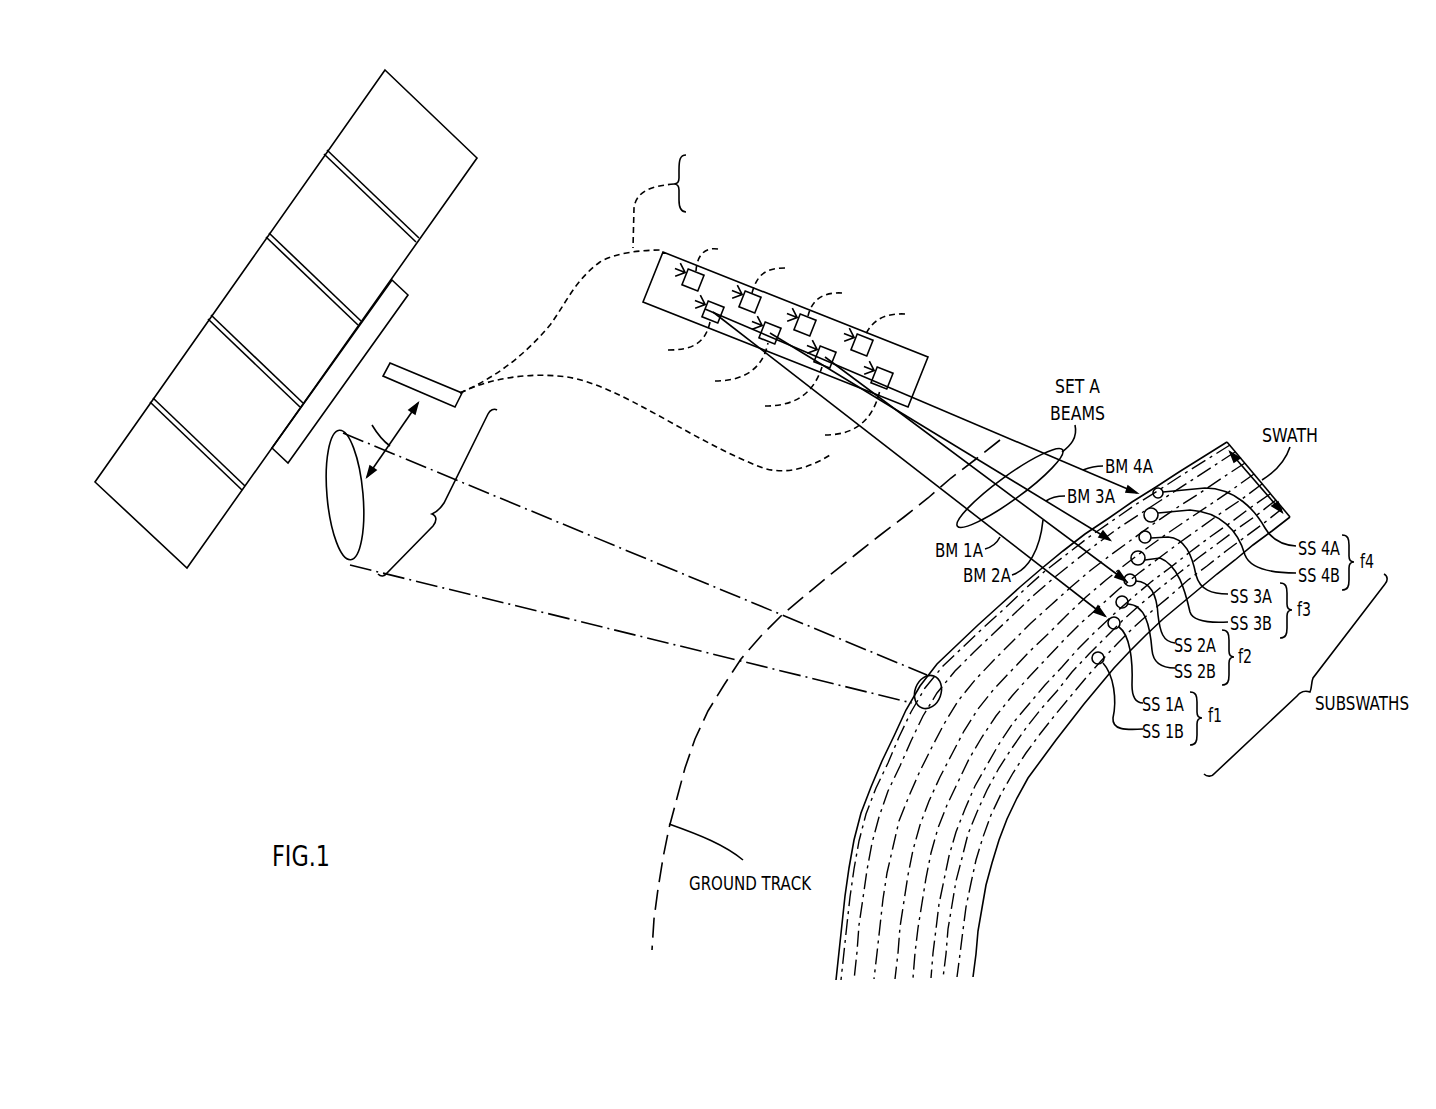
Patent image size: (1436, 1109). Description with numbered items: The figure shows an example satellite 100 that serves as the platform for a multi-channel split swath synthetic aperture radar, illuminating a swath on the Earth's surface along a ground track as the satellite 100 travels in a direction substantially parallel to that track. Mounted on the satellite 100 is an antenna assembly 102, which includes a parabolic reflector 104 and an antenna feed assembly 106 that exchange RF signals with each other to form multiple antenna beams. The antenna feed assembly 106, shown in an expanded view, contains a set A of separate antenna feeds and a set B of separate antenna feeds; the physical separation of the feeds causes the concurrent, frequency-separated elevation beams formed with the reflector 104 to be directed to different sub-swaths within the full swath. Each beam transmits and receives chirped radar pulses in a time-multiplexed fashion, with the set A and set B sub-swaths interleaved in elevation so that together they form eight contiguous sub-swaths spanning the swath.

The satellite 100 is at (212, 284).
The antenna assembly 102 is at (444, 488).
The parabolic reflector 104 is at (333, 538).
The antenna feed assembly 106 is at (440, 388).